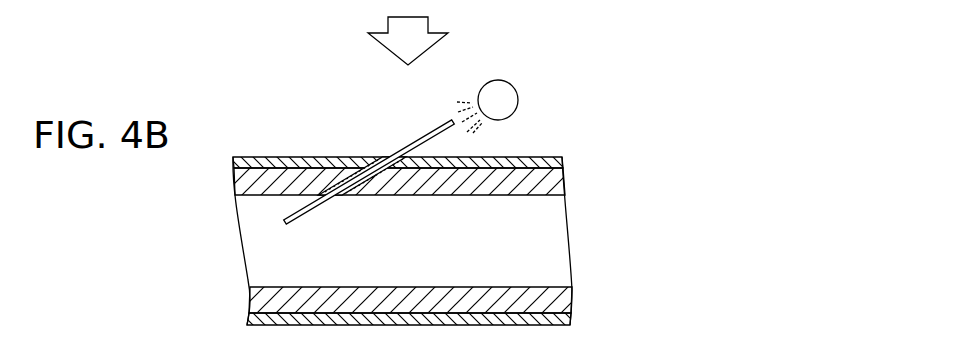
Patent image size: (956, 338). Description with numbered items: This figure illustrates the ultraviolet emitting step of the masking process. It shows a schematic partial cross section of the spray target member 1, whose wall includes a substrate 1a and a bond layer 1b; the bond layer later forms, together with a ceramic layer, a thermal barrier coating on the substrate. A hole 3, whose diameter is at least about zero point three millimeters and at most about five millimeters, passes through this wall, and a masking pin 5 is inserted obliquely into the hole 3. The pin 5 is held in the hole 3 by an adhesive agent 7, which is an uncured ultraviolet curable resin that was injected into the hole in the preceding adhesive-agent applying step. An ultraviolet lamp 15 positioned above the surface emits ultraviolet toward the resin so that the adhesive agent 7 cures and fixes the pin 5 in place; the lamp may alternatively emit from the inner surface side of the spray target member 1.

The spray target member 1 is at (420, 188).
The substrate 1a is at (560, 160).
The bond layer 1b is at (521, 158).
The hole 3 is at (375, 182).
The pin 5 is at (440, 122).
The adhesive agent 7 is at (355, 195).
The ultraviolet lamp 15 is at (500, 90).